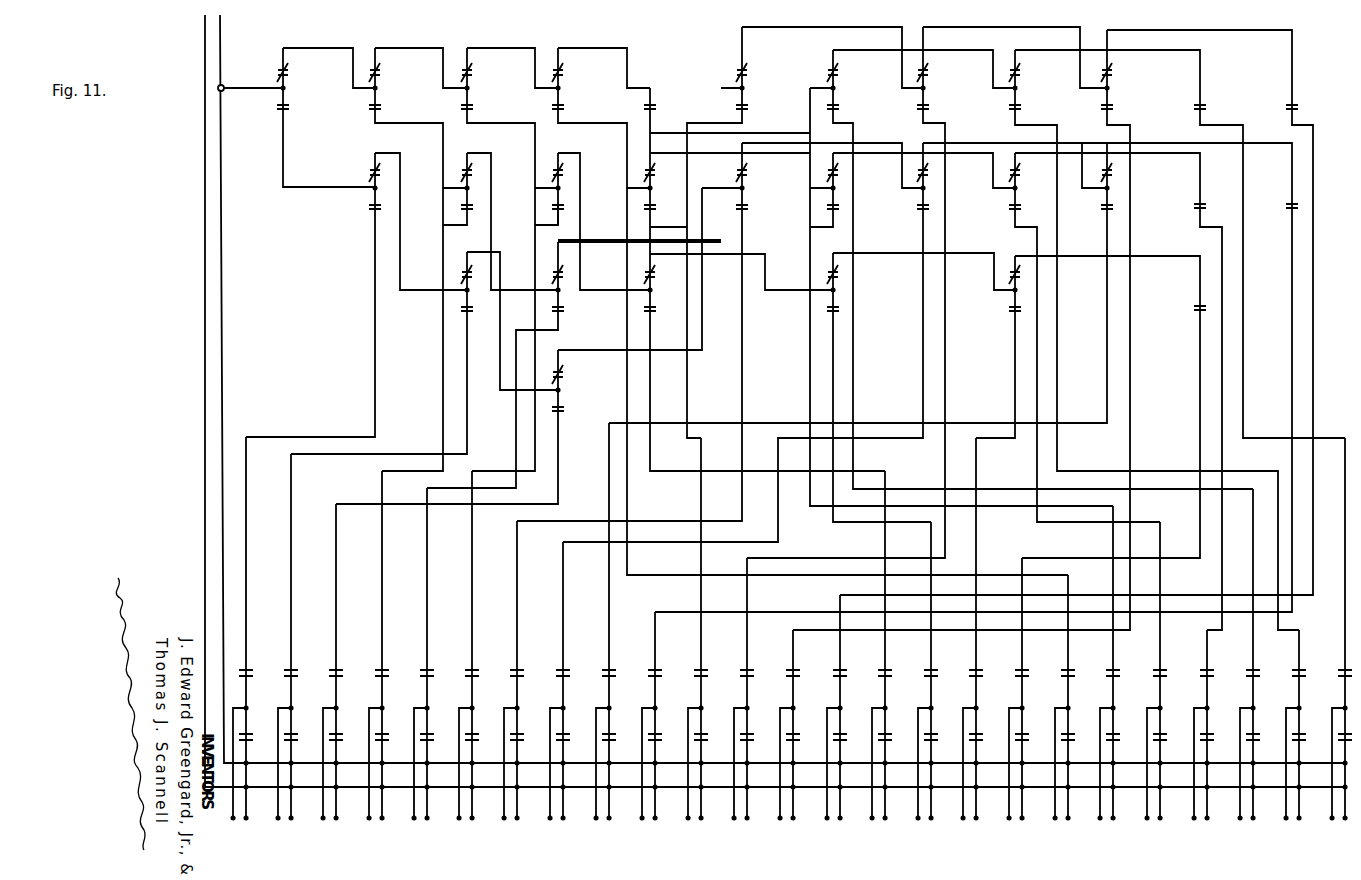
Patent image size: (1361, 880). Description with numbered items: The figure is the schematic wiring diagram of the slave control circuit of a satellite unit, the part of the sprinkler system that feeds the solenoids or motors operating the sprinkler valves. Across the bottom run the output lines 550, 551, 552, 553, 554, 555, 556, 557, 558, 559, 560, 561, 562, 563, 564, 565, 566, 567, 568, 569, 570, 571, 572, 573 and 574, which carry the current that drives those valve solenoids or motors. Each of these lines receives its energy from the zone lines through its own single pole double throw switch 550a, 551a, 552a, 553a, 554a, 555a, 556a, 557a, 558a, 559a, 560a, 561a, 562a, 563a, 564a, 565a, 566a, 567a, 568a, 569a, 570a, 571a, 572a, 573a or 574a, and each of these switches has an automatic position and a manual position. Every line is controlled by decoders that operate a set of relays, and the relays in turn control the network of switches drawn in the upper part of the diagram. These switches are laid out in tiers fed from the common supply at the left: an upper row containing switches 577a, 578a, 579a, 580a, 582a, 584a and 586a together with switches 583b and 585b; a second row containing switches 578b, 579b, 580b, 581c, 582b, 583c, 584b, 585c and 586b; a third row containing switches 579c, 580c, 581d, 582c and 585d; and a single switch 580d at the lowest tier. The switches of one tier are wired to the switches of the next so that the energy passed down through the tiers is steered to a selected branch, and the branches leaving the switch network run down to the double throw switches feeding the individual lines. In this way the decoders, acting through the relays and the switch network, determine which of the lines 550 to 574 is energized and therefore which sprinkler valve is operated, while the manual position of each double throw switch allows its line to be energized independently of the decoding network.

The line 550 is at (246, 639).
The line 551 is at (303, 657).
The line 552 is at (336, 673).
The line 553 is at (394, 666).
The line 554 is at (427, 665).
The line 555 is at (484, 666).
The line 556 is at (517, 681).
The line 557 is at (575, 701).
The line 558 is at (609, 632).
The line 559 is at (667, 736).
The line 560 is at (701, 640).
The line 561 is at (759, 709).
The line 562 is at (793, 736).
The line 563 is at (852, 728).
The line 564 is at (885, 656).
The line 565 is at (943, 691).
The line 566 is at (976, 640).
The line 567 is at (1034, 709).
The line 568 is at (1068, 708).
The line 569 is at (1125, 683).
The line 570 is at (1160, 682).
The line 571 is at (1219, 745).
The line 572 is at (1253, 665).
The line 573 is at (1311, 745).
The line 574 is at (1327, 640).
The single pole double throw switch 550a is at (253, 676).
The single pole double throw switch 551a is at (298, 676).
The single pole double throw switch 552a is at (343, 676).
The single pole double throw switch 553a is at (389, 676).
The single pole double throw switch 554a is at (434, 676).
The single pole double throw switch 555a is at (479, 676).
The single pole double throw switch 556a is at (524, 676).
The single pole double throw switch 557a is at (570, 676).
The single pole double throw switch 558a is at (616, 676).
The single pole double throw switch 559a is at (662, 676).
The single pole double throw switch 560a is at (708, 676).
The single pole double throw switch 561a is at (754, 676).
The single pole double throw switch 562a is at (800, 676).
The single pole double throw switch 563a is at (847, 676).
The single pole double throw switch 564a is at (892, 676).
The single pole double throw switch 565a is at (938, 676).
The single pole double throw switch 566a is at (983, 676).
The single pole double throw switch 567a is at (1029, 676).
The single pole double throw switch 568a is at (1075, 676).
The single pole double throw switch 569a is at (1120, 676).
The single pole double throw switch 570a is at (1167, 676).
The single pole double throw switch 571a is at (1214, 676).
The single pole double throw switch 572a is at (1260, 676).
The single pole double throw switch 573a is at (1306, 676).
The single pole double throw switch 574a is at (1338, 678).
The switch 577a is at (290, 74).
The switch 578a is at (382, 74).
The switch 578b is at (369, 178).
The switch 579a is at (474, 74).
The switch 579b is at (461, 178).
The switch 579c is at (461, 280).
The switch 580a is at (565, 74).
The switch 580b is at (552, 178).
The switch 580c is at (565, 276).
The switch 580d is at (565, 376).
The switch 581c is at (644, 178).
The switch 581d is at (644, 280).
The switch 582a is at (749, 74).
The switch 582b is at (749, 174).
The switching element 582c is at (841, 276).
The switch 583b is at (840, 74).
The switch 583c is at (841, 174).
The switch 584a is at (930, 74).
The switch 584b is at (931, 174).
The switch 585b is at (1022, 74).
The switch 585c is at (1009, 178).
The switch 585d is at (1009, 280).
The switch 586a is at (1114, 74).
The switch 586b is at (1115, 174).